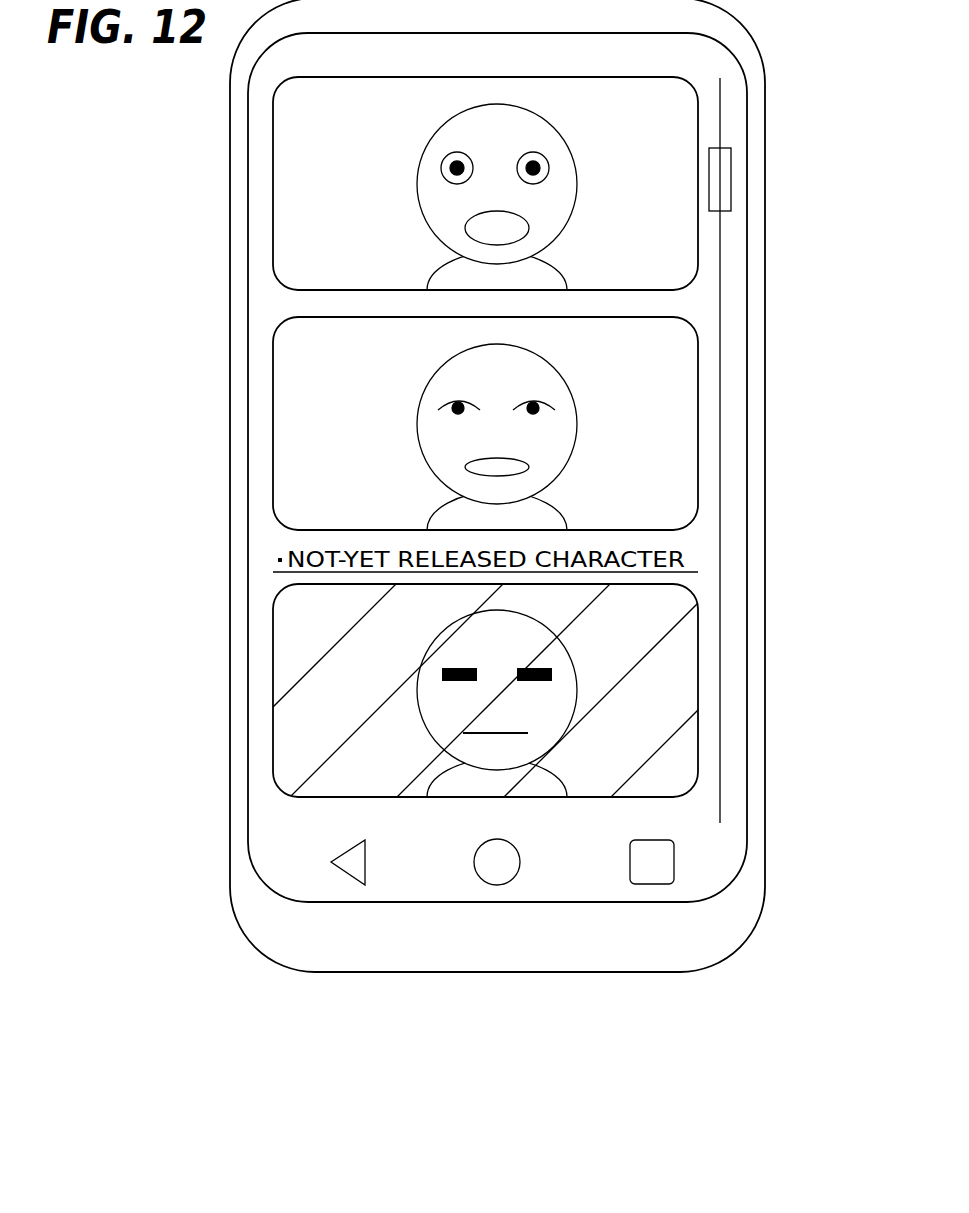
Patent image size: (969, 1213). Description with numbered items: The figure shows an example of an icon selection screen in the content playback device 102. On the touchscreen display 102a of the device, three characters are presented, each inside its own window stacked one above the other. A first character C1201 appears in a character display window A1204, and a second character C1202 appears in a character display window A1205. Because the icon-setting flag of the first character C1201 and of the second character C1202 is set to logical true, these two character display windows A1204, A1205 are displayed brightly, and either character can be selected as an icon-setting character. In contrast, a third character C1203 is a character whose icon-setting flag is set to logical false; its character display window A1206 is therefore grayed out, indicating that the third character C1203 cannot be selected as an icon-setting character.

The content playback device 102 is at (517, 1091).
The touchscreen display 102a is at (755, 322).
The character display window A1204 is at (270, 127).
The first character C1201 is at (417, 174).
The character display window A1205 is at (270, 386).
The second character C1202 is at (417, 427).
The character display window A1206 is at (270, 656).
The third character C1203 is at (417, 702).